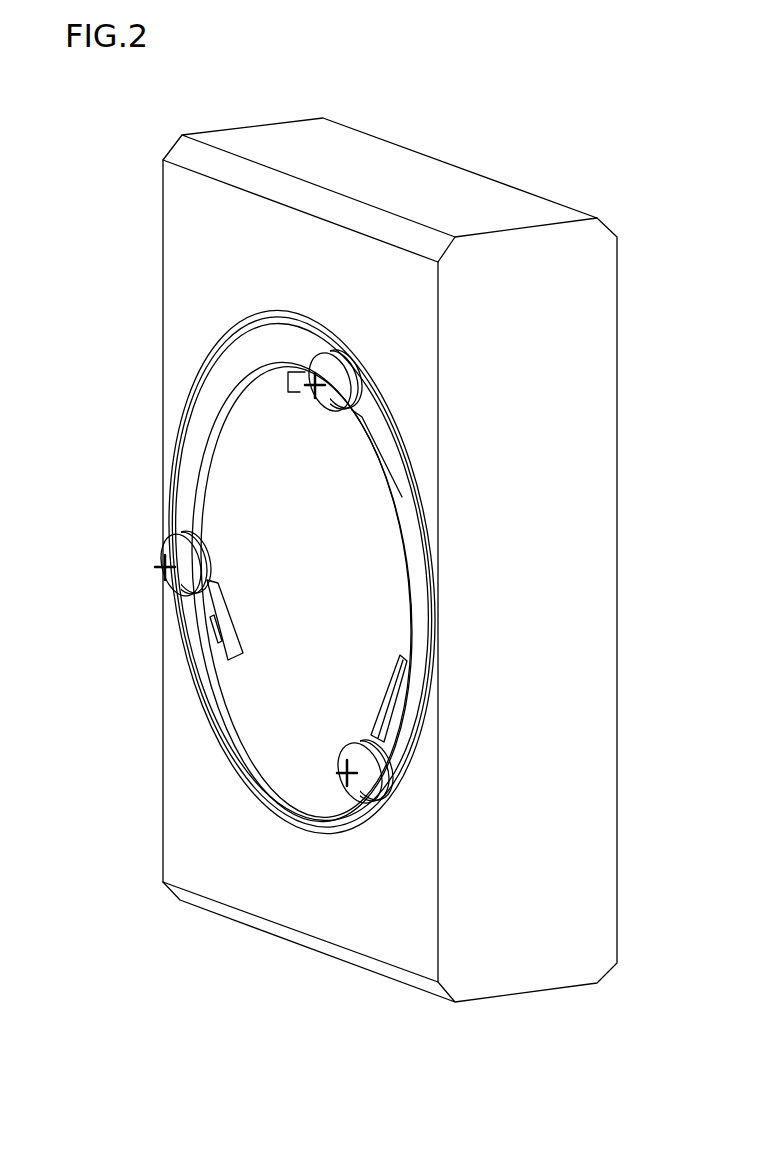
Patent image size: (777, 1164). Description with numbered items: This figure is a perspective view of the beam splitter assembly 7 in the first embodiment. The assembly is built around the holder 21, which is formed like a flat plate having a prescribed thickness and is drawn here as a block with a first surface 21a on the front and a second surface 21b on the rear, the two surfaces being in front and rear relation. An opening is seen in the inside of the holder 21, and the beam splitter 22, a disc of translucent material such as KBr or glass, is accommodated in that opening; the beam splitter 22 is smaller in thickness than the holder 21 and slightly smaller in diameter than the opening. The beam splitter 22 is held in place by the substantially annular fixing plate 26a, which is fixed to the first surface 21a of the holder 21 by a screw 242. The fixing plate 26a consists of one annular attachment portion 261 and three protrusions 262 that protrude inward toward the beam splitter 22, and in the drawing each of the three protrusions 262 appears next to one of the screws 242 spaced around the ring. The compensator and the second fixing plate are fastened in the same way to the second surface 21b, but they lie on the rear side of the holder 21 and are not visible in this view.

The beam splitter assembly 7 is at (565, 101).
The holder 21 is at (617, 385).
The first surface 21a is at (182, 198).
The second surface 21b is at (440, 200).
The beam splitter 22 is at (372, 562).
The fixing plate 26a is at (316, 313).
The attachment portion 261 is at (418, 630).
The protrusion 262 is at (298, 386).
The screw 242 is at (337, 390).